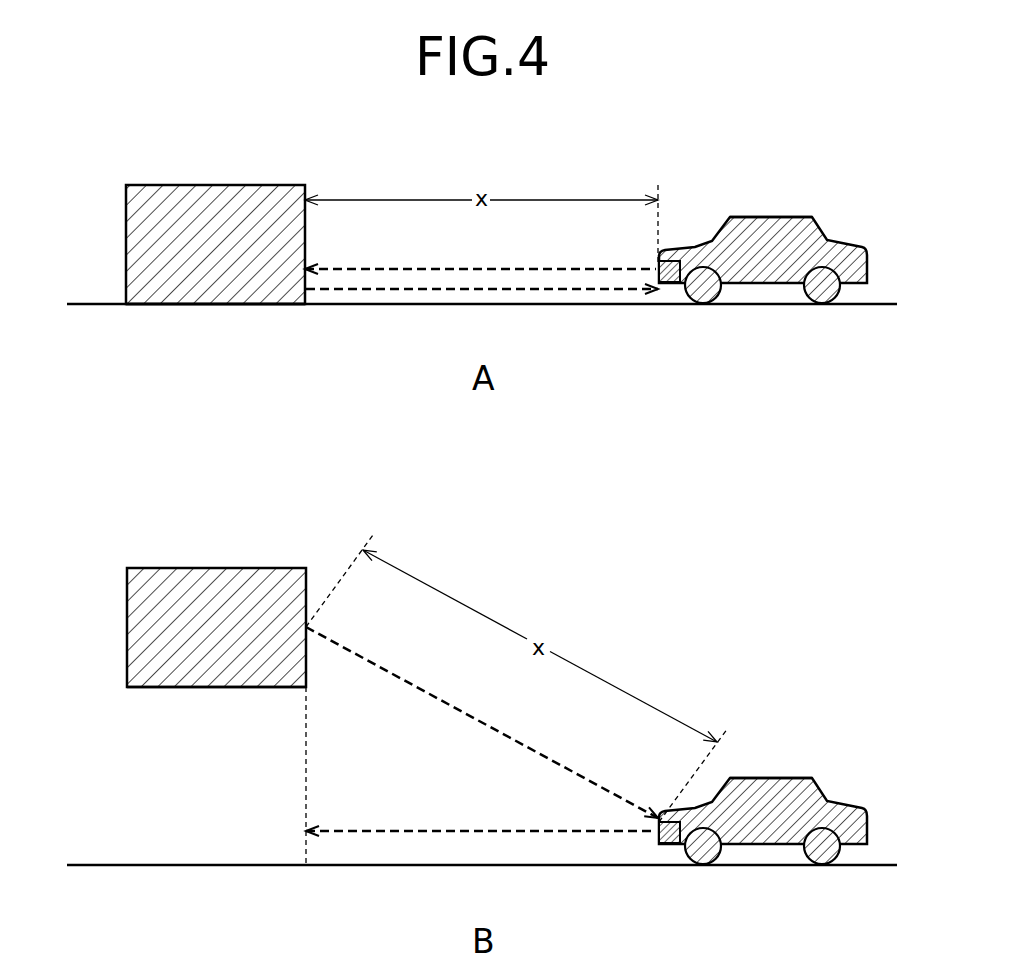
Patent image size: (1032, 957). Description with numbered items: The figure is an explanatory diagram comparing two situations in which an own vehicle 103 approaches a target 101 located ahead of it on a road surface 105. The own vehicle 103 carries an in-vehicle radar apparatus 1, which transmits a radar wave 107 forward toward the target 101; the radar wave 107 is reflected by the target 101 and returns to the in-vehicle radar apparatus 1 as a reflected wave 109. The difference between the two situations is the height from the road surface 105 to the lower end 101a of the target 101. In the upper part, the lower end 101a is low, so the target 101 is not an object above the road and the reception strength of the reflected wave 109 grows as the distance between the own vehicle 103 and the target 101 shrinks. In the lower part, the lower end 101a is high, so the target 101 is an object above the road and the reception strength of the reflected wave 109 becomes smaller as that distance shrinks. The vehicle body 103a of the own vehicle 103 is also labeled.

The in-vehicle radar apparatus 1 is at (681, 261).
The target 101 is at (220, 185).
The lower end of the target 101a is at (203, 304).
The own vehicle 103 is at (772, 236).
The vehicle body 103a is at (812, 217).
The road surface 105 is at (93, 303).
The radar wave 107 is at (515, 268).
The reflected wave 109 is at (548, 290).